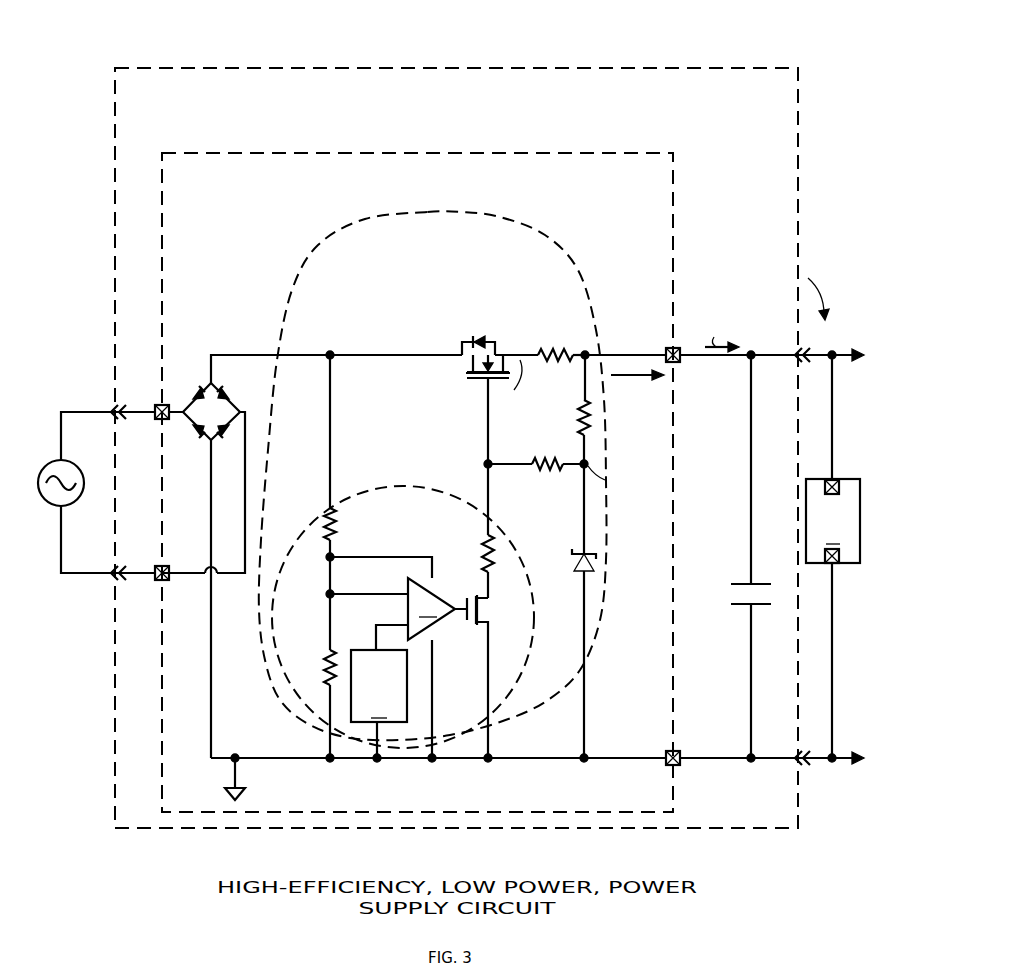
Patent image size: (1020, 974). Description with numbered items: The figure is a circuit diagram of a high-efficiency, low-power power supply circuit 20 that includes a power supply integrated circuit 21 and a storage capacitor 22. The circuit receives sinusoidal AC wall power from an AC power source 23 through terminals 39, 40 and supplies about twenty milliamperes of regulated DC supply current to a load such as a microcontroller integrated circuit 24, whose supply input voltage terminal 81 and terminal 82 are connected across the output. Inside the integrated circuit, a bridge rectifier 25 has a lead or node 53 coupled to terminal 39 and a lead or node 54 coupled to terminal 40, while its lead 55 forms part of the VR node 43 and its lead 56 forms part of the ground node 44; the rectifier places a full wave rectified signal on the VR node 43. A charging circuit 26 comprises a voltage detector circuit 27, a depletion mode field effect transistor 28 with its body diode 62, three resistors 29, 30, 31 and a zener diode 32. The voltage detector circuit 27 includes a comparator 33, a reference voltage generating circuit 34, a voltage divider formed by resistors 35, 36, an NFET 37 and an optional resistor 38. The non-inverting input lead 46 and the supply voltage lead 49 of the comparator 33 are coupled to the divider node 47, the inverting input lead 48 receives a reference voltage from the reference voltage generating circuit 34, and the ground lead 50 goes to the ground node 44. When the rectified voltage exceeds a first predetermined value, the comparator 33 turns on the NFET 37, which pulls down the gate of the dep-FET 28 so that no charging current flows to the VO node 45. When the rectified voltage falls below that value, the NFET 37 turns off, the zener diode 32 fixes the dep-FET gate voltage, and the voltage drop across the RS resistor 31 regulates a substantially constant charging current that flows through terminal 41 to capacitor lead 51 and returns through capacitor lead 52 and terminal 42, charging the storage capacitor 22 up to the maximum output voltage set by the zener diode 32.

The power supply circuit 20 is at (642, 68).
The power supply integrated circuit 21 is at (402, 153).
The storage capacitor 22 is at (772, 493).
The AC power source 23 is at (70, 505).
The microcontroller integrated circuit 24 is at (834, 556).
The bridge rectifier 25 is at (246, 556).
The charging circuit 26 is at (401, 212).
The voltage detector circuit 27 is at (392, 483).
The depletion mode n-channel field effect transistor 28 is at (480, 331).
The resistor 29 is at (576, 431).
The resistor 30 is at (549, 472).
The RS resistor 31 is at (560, 358).
The zener diode 32 is at (577, 575).
The comparator 33 is at (382, 649).
The reference voltage generating circuit 34 is at (379, 704).
The resistor 35 is at (334, 527).
The resistor 36 is at (323, 660).
The N-channel field effect transistor 37 is at (496, 627).
The optional resistor 38 is at (472, 566).
The terminal 39 is at (166, 420).
The terminal 40 is at (165, 582).
The terminal 41 is at (677, 366).
The terminal 42 is at (675, 754).
The VR node 43 is at (394, 354).
The ground node 44 is at (532, 762).
The VO node 45 is at (637, 353).
The non-inverting input lead 46 is at (404, 590).
The node 47 is at (327, 588).
The inverting input lead 48 is at (405, 625).
The supply voltage lead 49 is at (436, 574).
The ground lead 50 is at (437, 644).
The capacitor lead 51 is at (736, 581).
The capacitor lead 52 is at (743, 607).
The lead or node of bridge rectifier 53 is at (182, 406).
The lead or node of bridge rectifier 54 is at (243, 405).
The lead of bridge rectifier 55 is at (217, 380).
The lead of bridge rectifier 56 is at (214, 441).
The body diode 62 is at (488, 338).
The supply input voltage terminal 81 is at (838, 480).
The terminal 82 is at (837, 568).